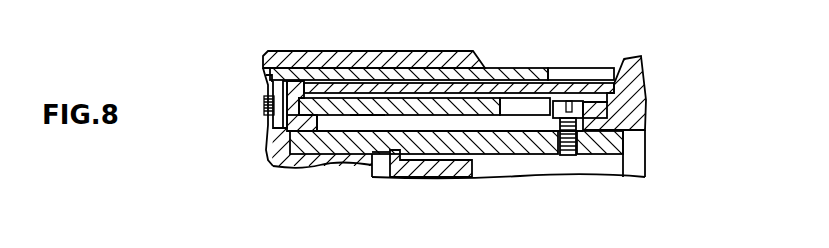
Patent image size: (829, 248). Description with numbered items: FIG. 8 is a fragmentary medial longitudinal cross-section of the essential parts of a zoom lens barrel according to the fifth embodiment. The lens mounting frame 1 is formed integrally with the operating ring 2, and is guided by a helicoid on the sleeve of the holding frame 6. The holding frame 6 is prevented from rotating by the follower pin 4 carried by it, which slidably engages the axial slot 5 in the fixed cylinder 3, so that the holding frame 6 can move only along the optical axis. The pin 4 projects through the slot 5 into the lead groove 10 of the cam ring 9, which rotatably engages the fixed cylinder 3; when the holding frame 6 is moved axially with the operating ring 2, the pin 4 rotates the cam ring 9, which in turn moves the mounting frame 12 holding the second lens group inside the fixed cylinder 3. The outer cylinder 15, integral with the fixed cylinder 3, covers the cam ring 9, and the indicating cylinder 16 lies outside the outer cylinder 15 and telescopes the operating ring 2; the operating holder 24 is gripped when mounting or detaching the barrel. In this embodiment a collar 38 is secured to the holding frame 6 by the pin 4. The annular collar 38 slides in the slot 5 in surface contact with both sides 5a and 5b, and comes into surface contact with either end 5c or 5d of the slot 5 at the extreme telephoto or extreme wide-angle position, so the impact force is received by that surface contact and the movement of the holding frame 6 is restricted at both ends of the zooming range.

The lens mounting frame 1 is at (340, 166).
The operating ring 2 is at (365, 54).
The fixed cylinder 3 is at (290, 167).
The follower pin 4 is at (580, 110).
The axial slot 5 is at (507, 123).
The side of slot 5a is at (367, 124).
The side of slot 5b is at (396, 176).
The end of slot 5c is at (296, 127).
The end of slot 5d is at (590, 110).
The holding frame 6 is at (538, 147).
The cam ring 9 is at (420, 107).
The lead groove 10 is at (525, 105).
The mounting frame 12 is at (443, 167).
The outer cylinder 15 is at (557, 87).
The indicating cylinder 16 is at (497, 72).
The operating holder 24 is at (630, 63).
The collar 38 is at (590, 141).